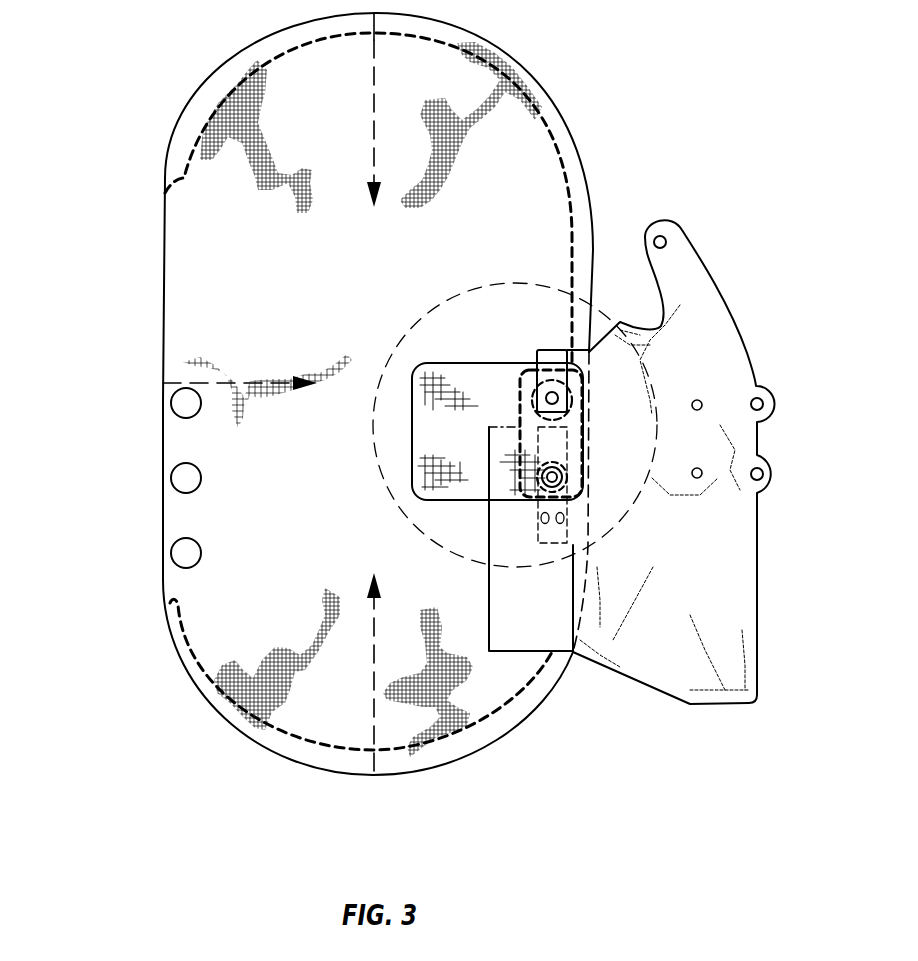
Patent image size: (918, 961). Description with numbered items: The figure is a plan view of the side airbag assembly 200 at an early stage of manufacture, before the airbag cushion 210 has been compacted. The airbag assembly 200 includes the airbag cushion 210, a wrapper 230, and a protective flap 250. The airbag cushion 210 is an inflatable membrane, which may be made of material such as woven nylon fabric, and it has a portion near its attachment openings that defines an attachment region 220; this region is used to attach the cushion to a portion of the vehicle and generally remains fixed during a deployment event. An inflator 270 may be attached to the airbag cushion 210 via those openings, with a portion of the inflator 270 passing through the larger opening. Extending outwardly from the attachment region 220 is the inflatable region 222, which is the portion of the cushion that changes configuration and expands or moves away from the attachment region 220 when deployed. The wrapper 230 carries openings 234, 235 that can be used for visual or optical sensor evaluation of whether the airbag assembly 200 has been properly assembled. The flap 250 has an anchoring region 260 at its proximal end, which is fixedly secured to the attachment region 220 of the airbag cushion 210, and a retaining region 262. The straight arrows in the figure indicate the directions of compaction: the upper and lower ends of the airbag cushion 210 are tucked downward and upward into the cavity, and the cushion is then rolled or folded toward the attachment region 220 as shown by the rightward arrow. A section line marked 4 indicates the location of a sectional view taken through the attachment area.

The airbag assembly 200 is at (103, 68).
The airbag cushion 210 is at (213, 703).
The attachment region 220 is at (527, 352).
The inflatable region 222 is at (212, 294).
The wrapper 230 is at (723, 705).
The opening 234 is at (710, 489).
The opening 235 is at (703, 388).
The protective flap 250 is at (462, 485).
The anchoring region 260 is at (512, 475).
The retaining region 262 is at (431, 503).
The inflator 270 is at (557, 377).
The section view indicator for FIG. 4 is at (565, 340).